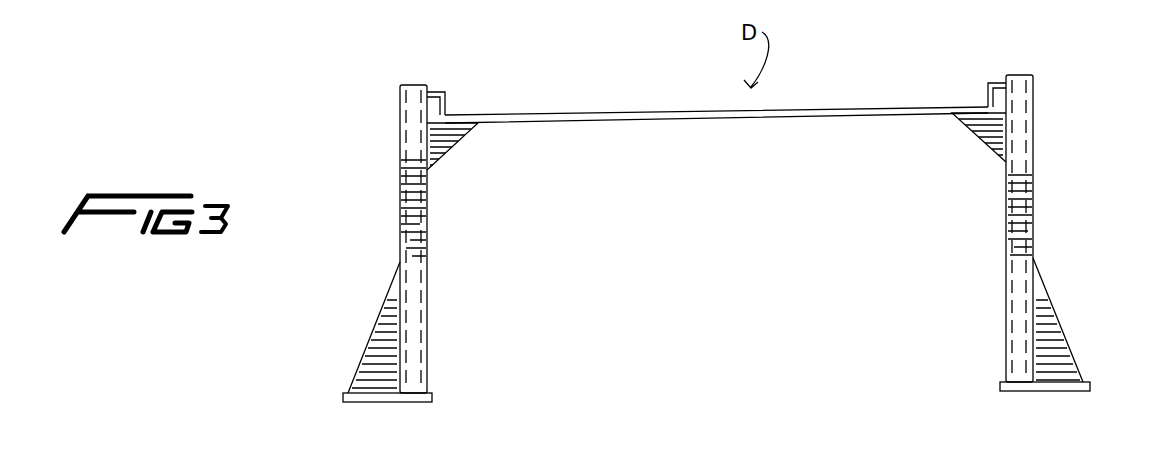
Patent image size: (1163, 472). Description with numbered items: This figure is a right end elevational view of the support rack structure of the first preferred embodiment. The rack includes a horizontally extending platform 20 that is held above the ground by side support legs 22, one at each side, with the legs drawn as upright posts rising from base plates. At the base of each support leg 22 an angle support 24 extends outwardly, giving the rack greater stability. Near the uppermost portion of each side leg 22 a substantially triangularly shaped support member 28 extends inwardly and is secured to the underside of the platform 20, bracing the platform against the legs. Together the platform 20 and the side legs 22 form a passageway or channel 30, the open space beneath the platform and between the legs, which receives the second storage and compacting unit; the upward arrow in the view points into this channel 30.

The platform 20 is at (718, 121).
The side support legs 22 is at (405, 218).
The angle support 24 is at (372, 353).
The triangularly shaped support member 28 is at (448, 143).
The passageway or channel 30 is at (629, 358).